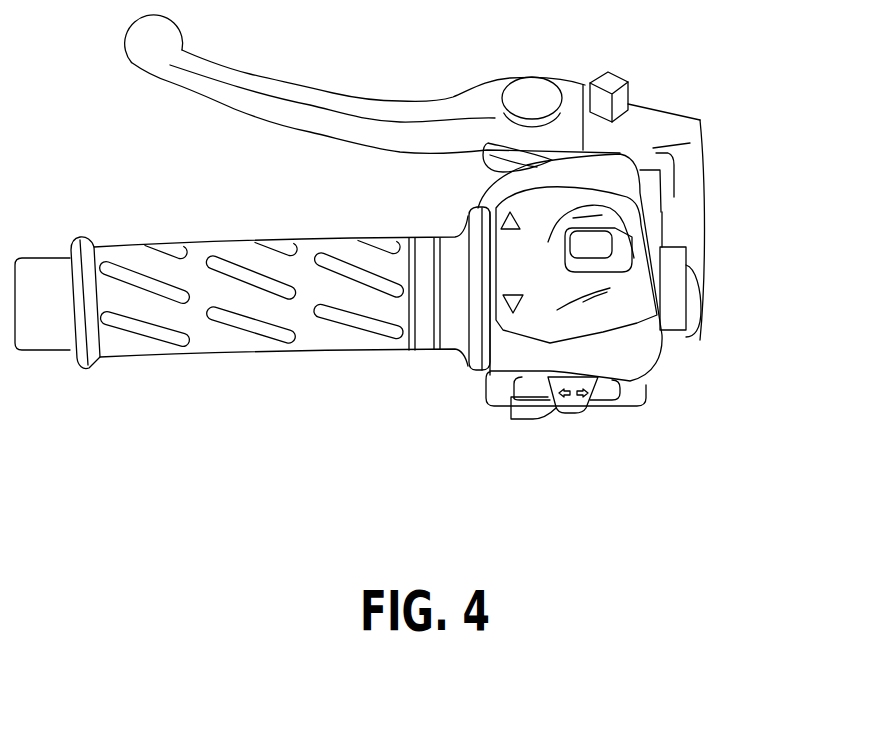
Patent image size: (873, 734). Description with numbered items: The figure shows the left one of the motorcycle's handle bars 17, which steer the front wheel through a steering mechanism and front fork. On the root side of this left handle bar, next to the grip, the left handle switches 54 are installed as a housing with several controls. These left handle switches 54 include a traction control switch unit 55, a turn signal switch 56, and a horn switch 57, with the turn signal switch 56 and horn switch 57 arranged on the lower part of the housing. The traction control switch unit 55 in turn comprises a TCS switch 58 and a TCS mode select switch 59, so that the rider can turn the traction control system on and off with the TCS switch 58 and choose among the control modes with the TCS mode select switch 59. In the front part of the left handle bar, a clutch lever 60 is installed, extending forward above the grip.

The handle bar 17 is at (129, 244).
The clutch lever 60 is at (278, 78).
The traction control switch unit 55 is at (765, 157).
The TCS mode select switch 59 is at (678, 197).
The TCS switch 58 is at (620, 258).
The left handle switches 54 is at (481, 367).
The turn signal switch 56 is at (575, 402).
The horn switch 57 is at (528, 420).